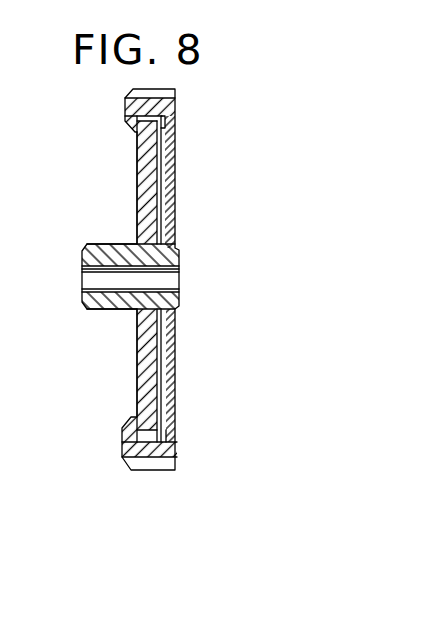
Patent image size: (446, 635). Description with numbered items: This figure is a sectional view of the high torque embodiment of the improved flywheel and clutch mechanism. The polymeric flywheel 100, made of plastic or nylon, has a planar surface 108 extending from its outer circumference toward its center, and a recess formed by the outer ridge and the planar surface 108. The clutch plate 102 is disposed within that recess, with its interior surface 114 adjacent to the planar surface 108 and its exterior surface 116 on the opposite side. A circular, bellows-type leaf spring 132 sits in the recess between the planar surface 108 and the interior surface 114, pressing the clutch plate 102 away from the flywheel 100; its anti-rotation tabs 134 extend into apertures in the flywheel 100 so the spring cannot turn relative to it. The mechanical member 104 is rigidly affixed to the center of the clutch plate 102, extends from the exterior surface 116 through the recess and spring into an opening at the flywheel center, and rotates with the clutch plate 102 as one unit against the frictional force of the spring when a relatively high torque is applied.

The polymeric flywheel 100 is at (210, 107).
The clutch plate 102 is at (137, 148).
The mechanical member 104 is at (179, 250).
The planar surface 108 is at (158, 372).
The interior surface 114 is at (157, 350).
The exterior surface 116 is at (137, 190).
The leaf spring 132 is at (174, 197).
The anti-rotation tabs 134 is at (168, 124).